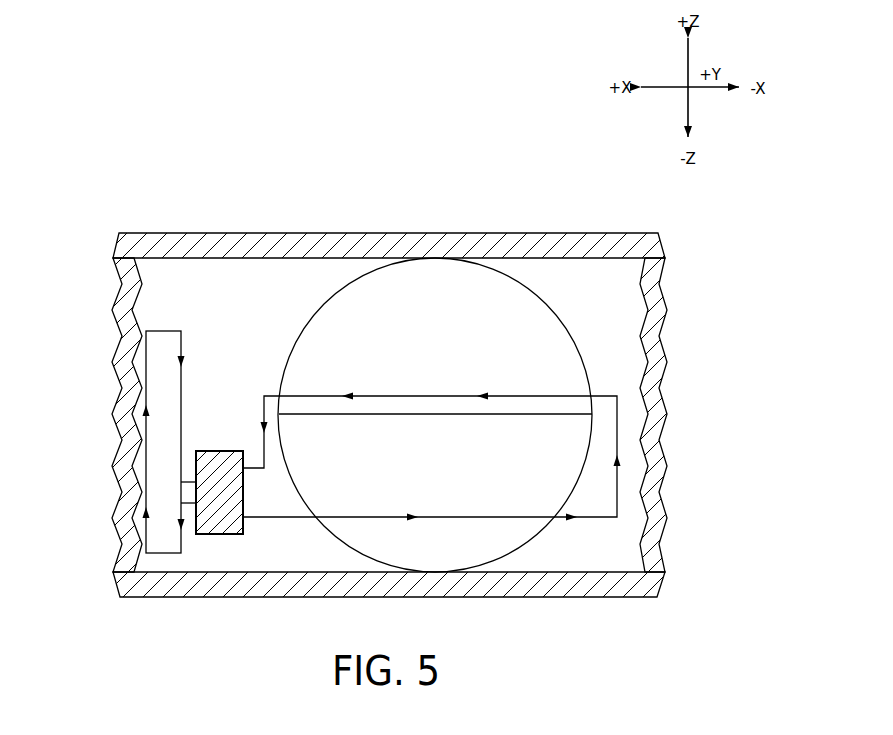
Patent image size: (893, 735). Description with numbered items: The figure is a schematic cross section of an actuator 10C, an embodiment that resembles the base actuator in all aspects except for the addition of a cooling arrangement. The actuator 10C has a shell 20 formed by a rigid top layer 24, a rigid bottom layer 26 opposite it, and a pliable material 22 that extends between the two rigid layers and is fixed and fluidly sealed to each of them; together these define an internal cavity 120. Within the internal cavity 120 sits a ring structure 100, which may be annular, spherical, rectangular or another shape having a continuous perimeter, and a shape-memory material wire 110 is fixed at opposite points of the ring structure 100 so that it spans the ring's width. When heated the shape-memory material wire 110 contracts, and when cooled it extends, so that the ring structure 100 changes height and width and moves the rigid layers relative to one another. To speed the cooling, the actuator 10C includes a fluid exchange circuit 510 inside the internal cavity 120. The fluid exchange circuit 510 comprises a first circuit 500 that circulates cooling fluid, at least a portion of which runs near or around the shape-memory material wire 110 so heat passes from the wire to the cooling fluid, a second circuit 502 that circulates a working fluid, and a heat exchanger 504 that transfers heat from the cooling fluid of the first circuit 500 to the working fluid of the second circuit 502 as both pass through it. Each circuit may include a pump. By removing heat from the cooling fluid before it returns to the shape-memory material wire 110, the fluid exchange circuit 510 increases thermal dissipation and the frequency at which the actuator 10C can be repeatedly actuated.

The actuator 10C is at (176, 183).
The shell 20 is at (259, 218).
The pliable material 22 is at (113, 322).
The rigid top layer 24 is at (468, 240).
The rigid bottom layer 26 is at (365, 598).
The ring structure 100 is at (561, 307).
The shape-memory material wire 110 is at (430, 414).
The internal cavity 120 is at (612, 367).
The first circuit 500 is at (476, 533).
The second circuit 502 is at (140, 452).
The heat exchanger 504 is at (218, 534).
The fluid exchange circuit 510 is at (254, 386).